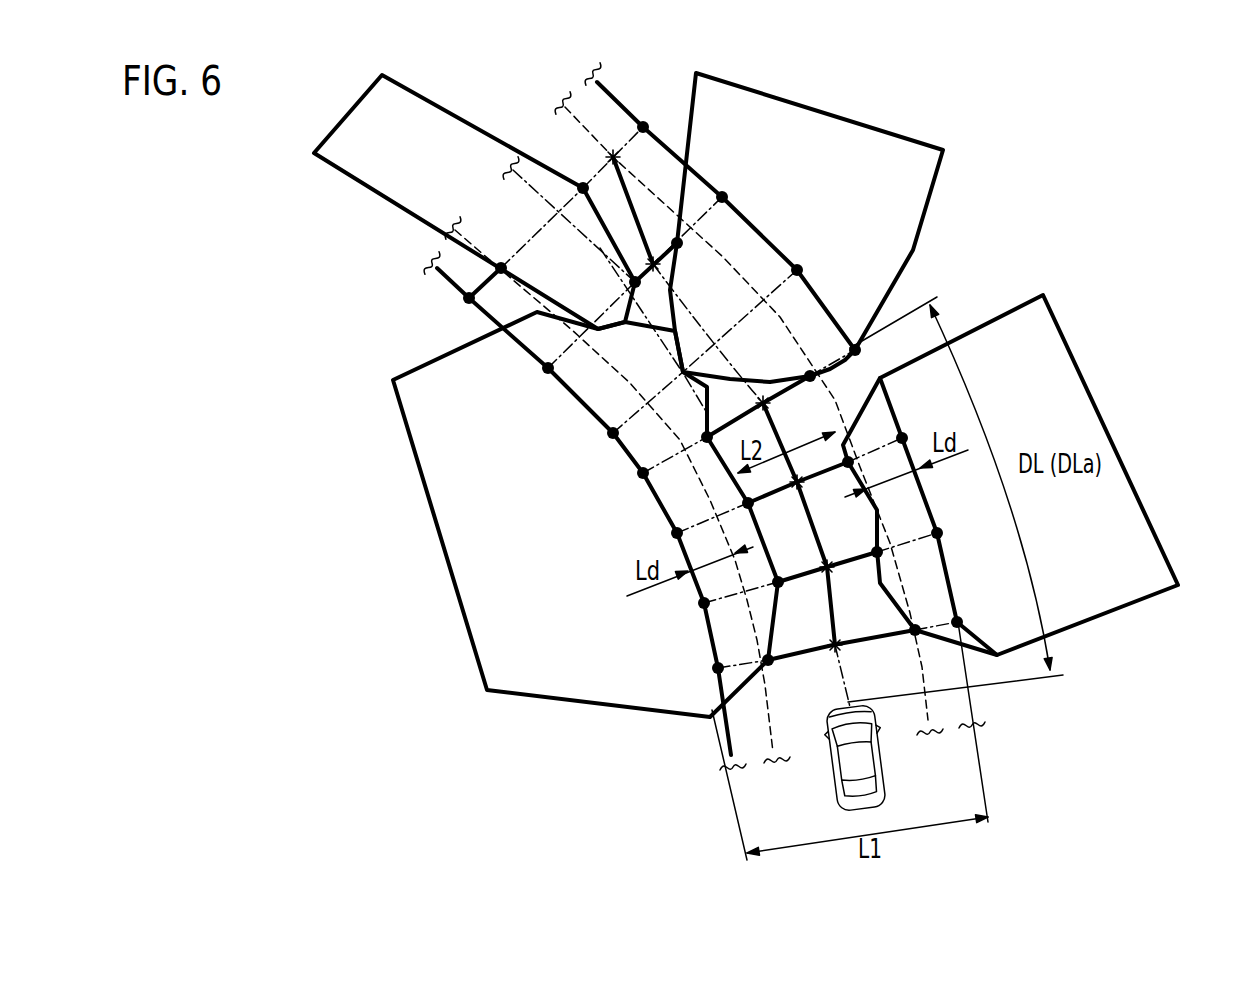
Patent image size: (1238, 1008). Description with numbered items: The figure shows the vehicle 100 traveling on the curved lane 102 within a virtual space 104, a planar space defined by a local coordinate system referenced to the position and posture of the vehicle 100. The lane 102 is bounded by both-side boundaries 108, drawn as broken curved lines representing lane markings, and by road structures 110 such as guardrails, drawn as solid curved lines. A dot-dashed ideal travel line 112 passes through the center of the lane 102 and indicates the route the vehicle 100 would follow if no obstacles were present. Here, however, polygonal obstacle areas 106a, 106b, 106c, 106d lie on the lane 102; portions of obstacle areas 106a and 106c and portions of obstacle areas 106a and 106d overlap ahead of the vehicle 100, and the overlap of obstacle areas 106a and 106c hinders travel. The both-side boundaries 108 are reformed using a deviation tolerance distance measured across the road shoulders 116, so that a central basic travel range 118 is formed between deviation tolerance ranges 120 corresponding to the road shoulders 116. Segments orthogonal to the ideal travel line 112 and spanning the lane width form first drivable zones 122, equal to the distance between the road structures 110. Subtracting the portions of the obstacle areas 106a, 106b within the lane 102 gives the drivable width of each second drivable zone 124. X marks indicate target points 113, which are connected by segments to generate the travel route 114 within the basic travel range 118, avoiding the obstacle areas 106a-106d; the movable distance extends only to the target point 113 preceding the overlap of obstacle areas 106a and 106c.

The vehicle 100 is at (880, 772).
The lane 102 is at (530, 132).
The virtual space 104 is at (186, 167).
The obstacle area 106a is at (430, 517).
The obstacle area 106b is at (1070, 350).
The obstacle area 106c is at (811, 108).
The obstacle area 106d is at (357, 180).
The both-side boundaries 108 is at (723, 257).
The road structures 110 is at (781, 256).
The ideal travel line 112 is at (530, 188).
The target points 113 is at (763, 400).
The travel route 114 is at (772, 422).
The road shoulders 116 is at (722, 223).
The basic travel range 118 is at (863, 598).
The deviation tolerance ranges 120 is at (673, 488).
The first drivable zone 122 is at (746, 662).
The second drivable zone 124 is at (879, 638).